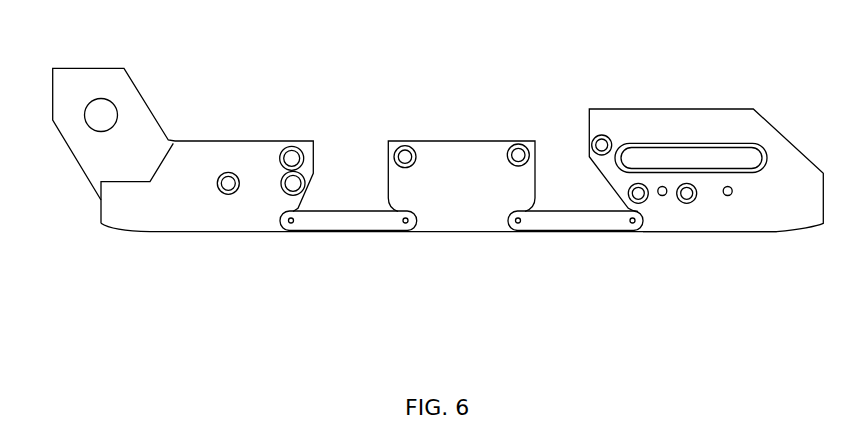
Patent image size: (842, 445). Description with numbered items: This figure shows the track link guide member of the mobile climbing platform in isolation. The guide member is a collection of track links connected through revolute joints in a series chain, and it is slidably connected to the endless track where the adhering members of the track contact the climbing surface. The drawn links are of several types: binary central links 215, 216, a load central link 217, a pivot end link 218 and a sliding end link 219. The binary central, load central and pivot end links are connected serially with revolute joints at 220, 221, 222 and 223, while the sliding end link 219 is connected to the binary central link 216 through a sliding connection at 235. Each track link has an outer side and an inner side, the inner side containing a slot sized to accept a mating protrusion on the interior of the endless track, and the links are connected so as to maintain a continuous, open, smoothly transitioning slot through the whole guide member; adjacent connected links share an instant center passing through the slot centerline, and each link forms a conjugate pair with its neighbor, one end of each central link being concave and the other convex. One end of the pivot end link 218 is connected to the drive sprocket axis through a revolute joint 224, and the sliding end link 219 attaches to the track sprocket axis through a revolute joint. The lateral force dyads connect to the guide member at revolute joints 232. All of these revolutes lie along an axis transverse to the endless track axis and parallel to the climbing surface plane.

The binary central link 215 is at (353, 236).
The binary central link 216 is at (588, 234).
The load central link 217 is at (463, 233).
The pivot end link 218 is at (160, 232).
The sliding end link 219 is at (733, 235).
The revolute joint 220 is at (285, 233).
The revolute joint 221 is at (410, 234).
The revolute joint 222 is at (520, 234).
The revolute joint 223 is at (638, 234).
The revolute joint 224 is at (83, 128).
The revolute joints 232 is at (589, 137).
The sliding connection 235 is at (748, 143).